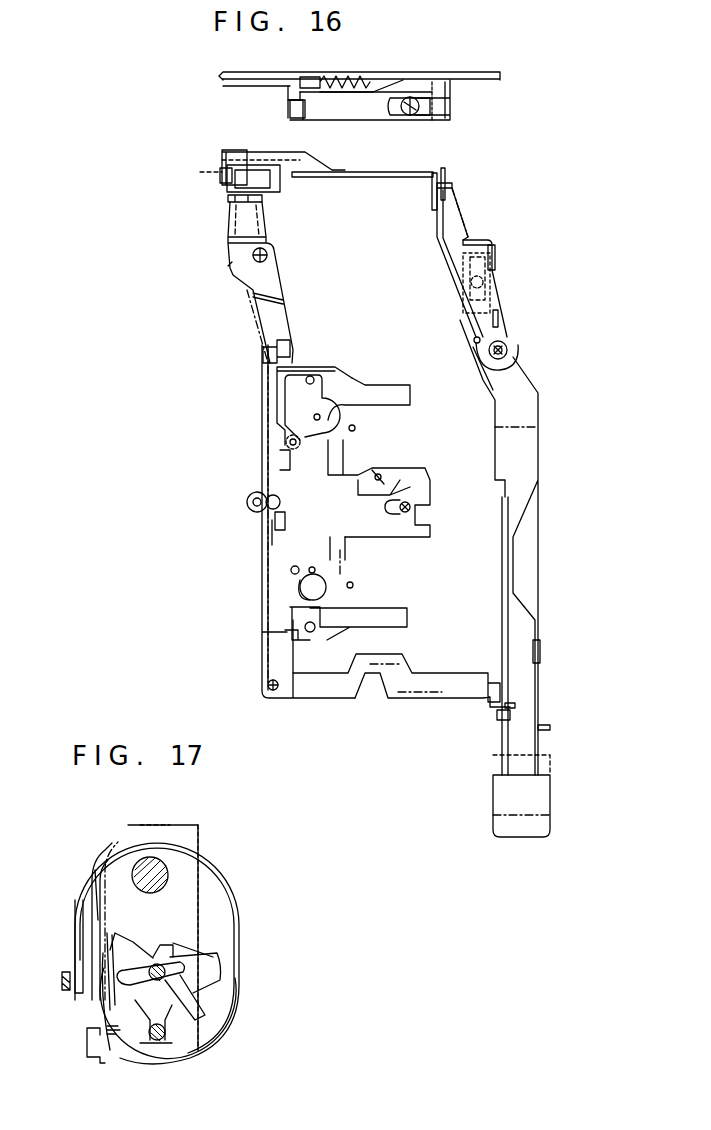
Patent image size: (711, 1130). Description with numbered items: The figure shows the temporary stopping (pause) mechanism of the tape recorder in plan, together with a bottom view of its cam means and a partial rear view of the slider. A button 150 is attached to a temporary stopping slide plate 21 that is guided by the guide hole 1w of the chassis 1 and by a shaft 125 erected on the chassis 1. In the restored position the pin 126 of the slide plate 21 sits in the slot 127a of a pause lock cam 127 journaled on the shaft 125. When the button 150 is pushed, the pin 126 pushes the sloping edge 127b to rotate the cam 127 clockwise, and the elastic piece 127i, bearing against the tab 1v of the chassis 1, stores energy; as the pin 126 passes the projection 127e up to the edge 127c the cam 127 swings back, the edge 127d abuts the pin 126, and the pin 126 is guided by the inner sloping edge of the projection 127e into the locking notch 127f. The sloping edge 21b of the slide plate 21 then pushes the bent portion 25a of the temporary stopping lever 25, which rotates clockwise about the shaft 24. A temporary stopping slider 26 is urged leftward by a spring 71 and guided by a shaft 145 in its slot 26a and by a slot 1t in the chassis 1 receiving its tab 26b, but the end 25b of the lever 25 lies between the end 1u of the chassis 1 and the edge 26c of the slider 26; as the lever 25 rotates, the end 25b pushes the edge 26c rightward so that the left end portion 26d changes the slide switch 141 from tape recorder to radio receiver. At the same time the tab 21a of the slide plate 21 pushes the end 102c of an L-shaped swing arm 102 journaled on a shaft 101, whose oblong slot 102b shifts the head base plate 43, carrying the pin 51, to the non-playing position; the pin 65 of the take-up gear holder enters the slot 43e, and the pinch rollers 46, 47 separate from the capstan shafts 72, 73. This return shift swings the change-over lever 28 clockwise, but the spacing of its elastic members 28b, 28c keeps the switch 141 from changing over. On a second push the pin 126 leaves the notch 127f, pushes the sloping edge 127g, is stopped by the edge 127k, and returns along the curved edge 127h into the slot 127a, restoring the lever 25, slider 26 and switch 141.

In FIG. 16, the chassis 1 is at (472, 78).
In FIG. 16, the slot of the chassis 1t is at (286, 96).
In FIG. 16, the end of the chassis 1u is at (431, 120).
In FIG. 17, the tab of the chassis 1v is at (60, 980).
In FIG. 16, the guide hole of the chassis 1w is at (546, 731).
In FIG. 16, the temporary stopping slide plate 21 is at (538, 680).
In FIG. 17, the temporary stopping slide plate 21 is at (199, 828).
In FIG. 16, the tab of the slide plate 21a is at (515, 706).
In FIG. 16, the sloping edge of the slide plate 21b is at (492, 242).
In FIG. 17, the sloping edge of the slide plate 21b is at (98, 852).
In FIG. 16, the shaft 24 is at (508, 350).
In FIG. 16, the temporary stopping lever 25 is at (458, 212).
In FIG. 16, the bent portion of the temporary stopping lever 25a is at (499, 262).
In FIG. 16, the end of the temporary stopping lever 25b is at (446, 120).
In FIG. 16, the temporary stopping slider 26 is at (450, 110).
In FIG. 16, the slot of the slider 26a is at (394, 112).
In FIG. 16, the tab of the slider 26b is at (290, 113).
In FIG. 16, the edge of the slider 26c is at (450, 100).
In FIG. 16, the left end portion of the slider 26d is at (233, 171).
In FIG. 16, the change-over lever 28 is at (284, 312).
In FIG. 16, the elastic member 28b is at (222, 190).
In FIG. 16, the elastic member 28c is at (275, 190).
In FIG. 16, the head base plate 43 is at (262, 403).
In FIG. 16, the slot of the head base plate 43e is at (412, 469).
In FIG. 16, the pinch roller 46 is at (326, 410).
In FIG. 16, the pinch roller 47 is at (318, 558).
In FIG. 16, the pin 51 is at (247, 502).
In FIG. 16, the pin of the take-up gear holder 65 is at (379, 473).
In FIG. 16, the spring 71 is at (350, 80).
In FIG. 16, the capstan shaft 72 is at (355, 427).
In FIG. 16, the capstan shaft 73 is at (353, 583).
In FIG. 16, the shaft 101 is at (268, 685).
In FIG. 16, the L-shaped swing arm 102 is at (400, 703).
In FIG. 16, the oblong slot of the swing arm 102b is at (278, 508).
In FIG. 16, the end of the swing arm 102c is at (497, 716).
In FIG. 16, the shaft 125 is at (488, 286).
In FIG. 17, the shaft 125 is at (153, 857).
In FIG. 16, the pin of the slide plate 126 is at (474, 343).
In FIG. 17, the pin of the slide plate 126 is at (159, 1041).
In FIG. 17, the pause lock cam 127 is at (221, 872).
In FIG. 17, the slot of the pause lock cam 127a is at (140, 1043).
In FIG. 17, the sloping edge of the pause lock cam 127b is at (187, 1027).
In FIG. 17, the edge of the pause lock cam 127c is at (160, 953).
In FIG. 17, the edge of the pause lock cam 127d is at (140, 950).
In FIG. 17, the projection of the pause lock cam 127e is at (165, 975).
In FIG. 17, the locking notch 127f is at (127, 1000).
In FIG. 17, the sloping edge of the pause lock cam 127g is at (153, 950).
In FIG. 17, the curved edge of the pause lock cam 127h is at (110, 960).
In FIG. 17, the elastic piece 127i is at (83, 997).
In FIG. 17, the edge of the pause lock cam 127k is at (115, 933).
In FIG. 16, the slide switch 141 is at (247, 160).
In FIG. 16, the shaft 145 is at (411, 97).
In FIG. 16, the button 150 is at (493, 826).